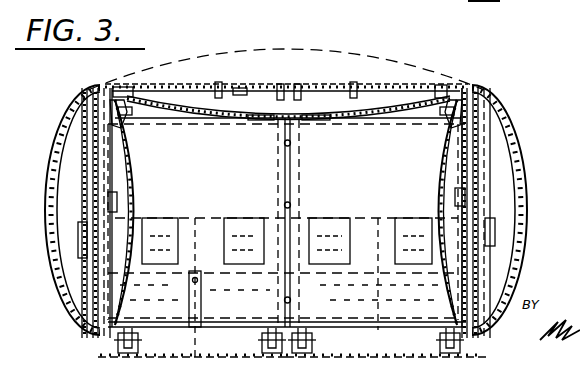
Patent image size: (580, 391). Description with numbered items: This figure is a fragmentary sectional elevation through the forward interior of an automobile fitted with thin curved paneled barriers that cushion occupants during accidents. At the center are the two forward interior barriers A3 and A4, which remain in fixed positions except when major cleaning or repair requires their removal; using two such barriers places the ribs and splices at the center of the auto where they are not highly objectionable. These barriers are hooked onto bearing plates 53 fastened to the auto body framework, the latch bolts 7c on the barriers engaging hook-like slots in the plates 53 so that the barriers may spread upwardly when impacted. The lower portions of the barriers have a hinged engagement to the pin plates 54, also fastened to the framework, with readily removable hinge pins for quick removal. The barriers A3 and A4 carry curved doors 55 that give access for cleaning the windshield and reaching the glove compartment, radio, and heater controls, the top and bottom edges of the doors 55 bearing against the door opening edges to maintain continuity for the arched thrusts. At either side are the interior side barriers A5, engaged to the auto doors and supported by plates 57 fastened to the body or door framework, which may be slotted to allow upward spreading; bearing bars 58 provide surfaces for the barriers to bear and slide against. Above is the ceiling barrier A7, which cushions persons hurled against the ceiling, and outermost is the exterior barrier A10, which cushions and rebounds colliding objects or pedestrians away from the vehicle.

The barrier A10 is at (46, 126).
The interior side barrier A5 is at (142, 170).
The ceiling barrier A7 is at (361, 116).
The barrier A3 is at (242, 333).
The barrier A4 is at (355, 333).
The bearing plate 53 is at (114, 88).
The pin plate 54 is at (140, 345).
The curved door 55 is at (162, 226).
The plate 57 is at (122, 122).
The bearing bar 58 is at (111, 296).
The latch bolt 7c is at (268, 118).